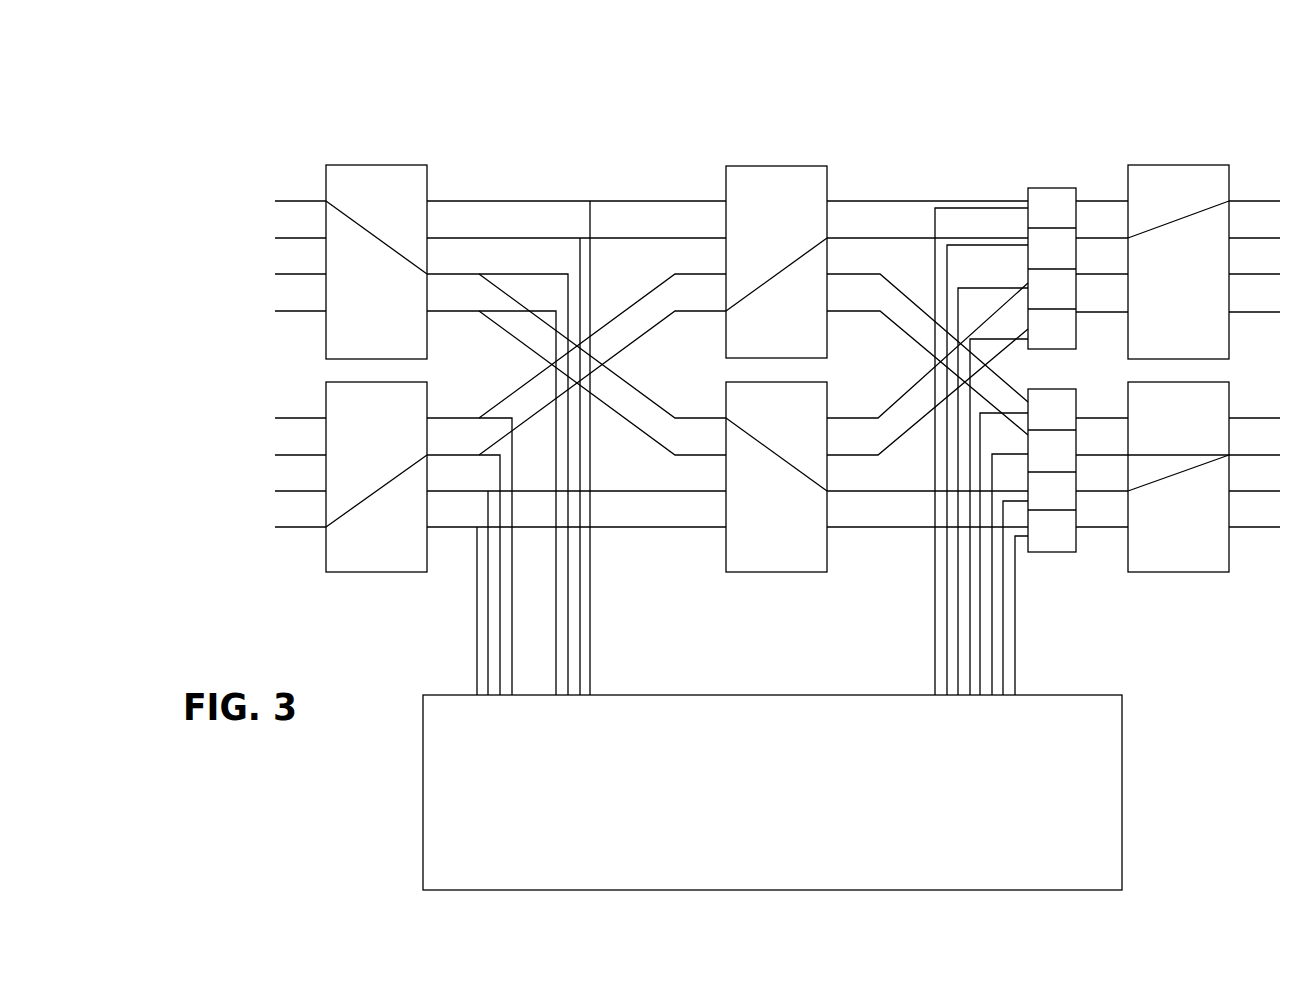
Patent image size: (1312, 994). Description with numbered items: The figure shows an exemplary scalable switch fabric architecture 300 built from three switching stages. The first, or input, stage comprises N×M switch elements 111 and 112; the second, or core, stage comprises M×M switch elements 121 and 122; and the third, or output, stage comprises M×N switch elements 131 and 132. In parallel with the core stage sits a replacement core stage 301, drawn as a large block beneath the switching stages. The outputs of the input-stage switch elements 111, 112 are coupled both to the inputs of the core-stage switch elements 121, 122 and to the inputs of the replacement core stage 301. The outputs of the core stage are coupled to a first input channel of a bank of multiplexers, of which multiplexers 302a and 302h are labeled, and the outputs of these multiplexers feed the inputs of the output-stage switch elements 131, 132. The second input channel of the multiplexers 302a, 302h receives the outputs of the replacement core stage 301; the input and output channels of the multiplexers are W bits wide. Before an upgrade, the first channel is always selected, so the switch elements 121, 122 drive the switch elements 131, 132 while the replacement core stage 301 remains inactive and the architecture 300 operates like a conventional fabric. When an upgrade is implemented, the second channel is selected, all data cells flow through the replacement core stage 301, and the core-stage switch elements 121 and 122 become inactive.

The scalable switch fabric architecture 300 is at (545, 101).
The N×M switch element 111 is at (374, 165).
The N×M switch element 112 is at (374, 572).
The M×M switch element 121 is at (774, 166).
The M×M switch element 122 is at (774, 572).
The M×N switch element 131 is at (1177, 165).
The M×N switch element 132 is at (1177, 572).
The multiplexer 302a is at (1050, 188).
The multiplexer 302h is at (1055, 552).
The replacement core stage 301 is at (423, 790).